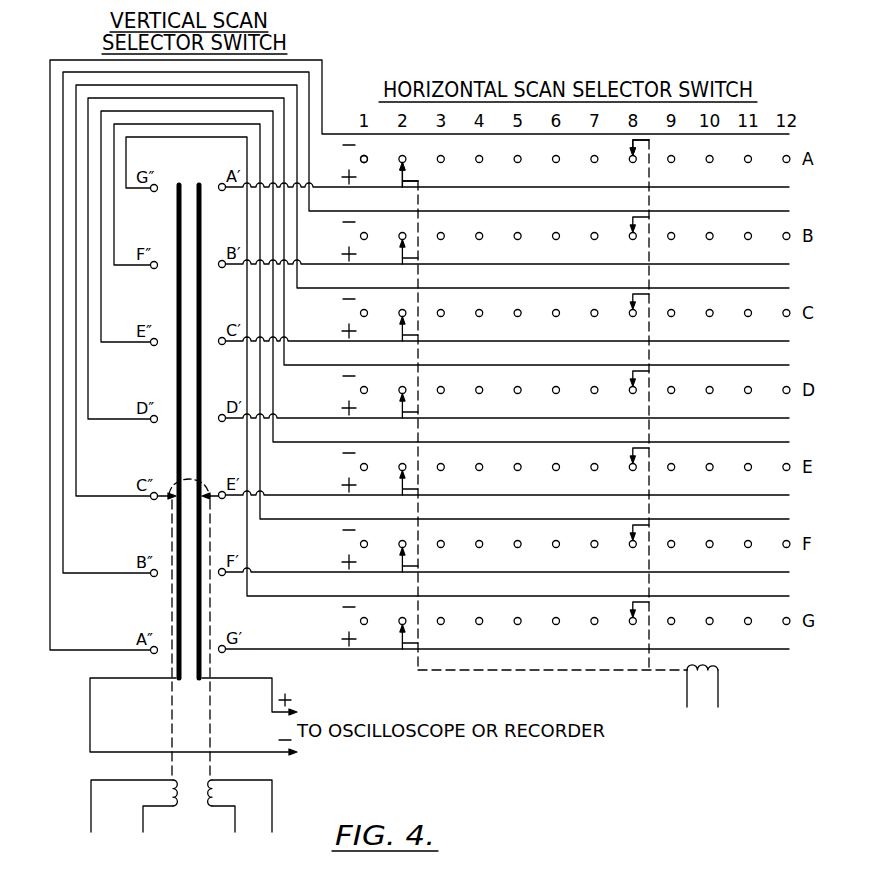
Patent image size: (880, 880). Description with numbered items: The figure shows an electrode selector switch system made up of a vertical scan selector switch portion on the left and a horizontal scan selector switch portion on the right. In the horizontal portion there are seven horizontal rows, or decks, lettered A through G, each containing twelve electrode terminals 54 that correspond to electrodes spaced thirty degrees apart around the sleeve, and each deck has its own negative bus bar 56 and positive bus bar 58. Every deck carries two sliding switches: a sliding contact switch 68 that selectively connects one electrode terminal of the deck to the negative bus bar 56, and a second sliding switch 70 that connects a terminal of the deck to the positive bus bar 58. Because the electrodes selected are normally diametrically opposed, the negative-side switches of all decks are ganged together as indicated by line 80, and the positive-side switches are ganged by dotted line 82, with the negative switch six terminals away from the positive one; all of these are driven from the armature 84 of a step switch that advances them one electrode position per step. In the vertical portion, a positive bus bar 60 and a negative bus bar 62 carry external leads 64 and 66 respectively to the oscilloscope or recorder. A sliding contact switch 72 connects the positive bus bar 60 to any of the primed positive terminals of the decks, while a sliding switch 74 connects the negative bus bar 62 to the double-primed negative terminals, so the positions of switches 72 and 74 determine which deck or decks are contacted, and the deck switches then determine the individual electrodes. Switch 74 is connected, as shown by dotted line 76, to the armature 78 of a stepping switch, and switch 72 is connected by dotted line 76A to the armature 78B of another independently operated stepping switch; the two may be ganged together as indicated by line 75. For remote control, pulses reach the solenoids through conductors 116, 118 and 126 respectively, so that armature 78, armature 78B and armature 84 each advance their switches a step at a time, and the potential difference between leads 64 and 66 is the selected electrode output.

The electrode terminal 54 is at (372, 150).
The negative bus bar 56 is at (356, 133).
The positive bus bar 58 is at (791, 187).
The positive bus bar 60 is at (200, 186).
The negative bus bar 62 is at (178, 186).
The external lead 64 is at (302, 710).
The external lead 66 is at (300, 756).
The sliding contact switch 68 is at (630, 148).
The sliding switch 70 is at (407, 172).
The sliding contact switch 72 is at (211, 499).
The sliding switch 74 is at (166, 499).
The ganging line 75 is at (176, 486).
The dotted line 76 is at (170, 598).
The dotted line 76A is at (210, 598).
The armature of stepping switch 78 is at (171, 787).
The armature of stepping switch 78B is at (215, 787).
The ganging line 80 is at (648, 660).
The dotted ganging line 82 is at (417, 666).
The armature of step switch 84 is at (720, 667).
The conductor 116 is at (142, 828).
The conductor 118 is at (272, 828).
The conductor 126 is at (719, 704).